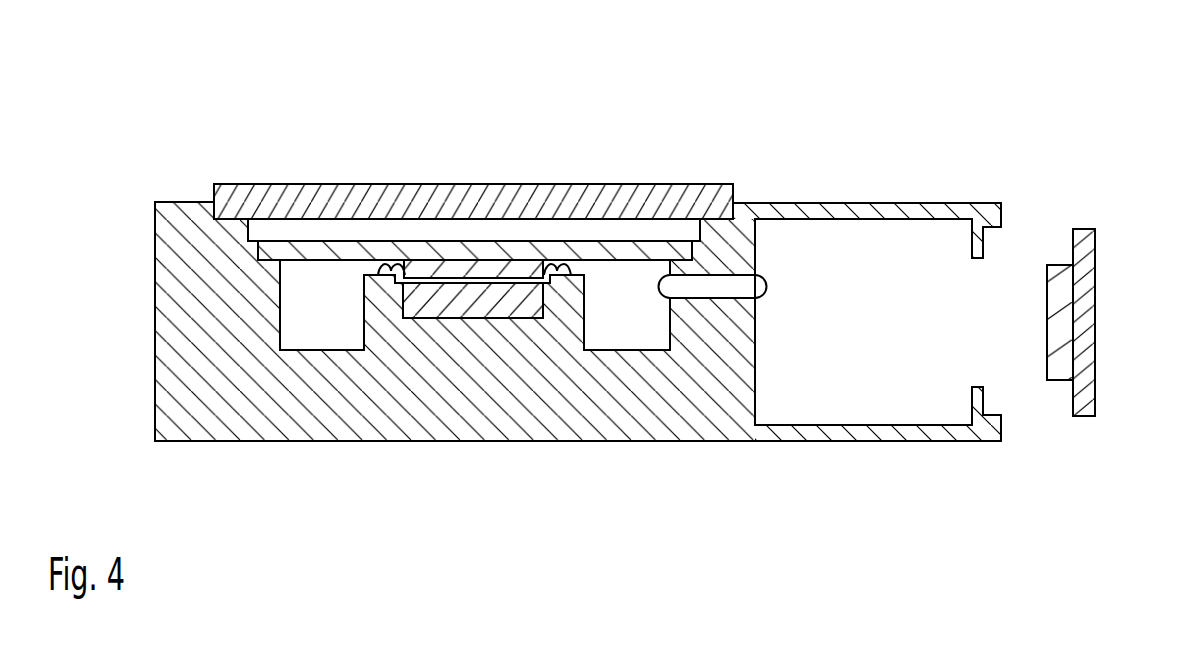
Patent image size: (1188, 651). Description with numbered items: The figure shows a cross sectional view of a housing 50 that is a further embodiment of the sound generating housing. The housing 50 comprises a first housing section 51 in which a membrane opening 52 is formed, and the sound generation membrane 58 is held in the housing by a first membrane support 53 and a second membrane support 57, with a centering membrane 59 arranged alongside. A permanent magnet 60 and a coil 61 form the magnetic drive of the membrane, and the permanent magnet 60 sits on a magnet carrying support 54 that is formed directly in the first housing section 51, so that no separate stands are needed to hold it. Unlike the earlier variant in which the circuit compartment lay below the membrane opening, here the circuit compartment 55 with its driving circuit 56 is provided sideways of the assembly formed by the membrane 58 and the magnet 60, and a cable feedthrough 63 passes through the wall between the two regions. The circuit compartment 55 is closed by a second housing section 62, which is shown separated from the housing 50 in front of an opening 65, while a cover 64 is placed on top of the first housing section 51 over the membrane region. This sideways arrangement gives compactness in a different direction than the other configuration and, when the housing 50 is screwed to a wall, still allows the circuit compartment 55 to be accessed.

The housing 50 is at (1126, 76).
The first housing section 51 is at (323, 415).
The membrane opening 52 is at (685, 230).
The first membrane support 53 is at (270, 260).
The magnet carrying support 54 is at (387, 303).
The circuit compartment 55 is at (842, 398).
The driving circuit 56 is at (1062, 365).
The second membrane support 57 is at (577, 268).
The sound generation membrane 58 is at (630, 247).
The centering membrane 59 is at (382, 265).
The permanent magnet 60 is at (480, 303).
The coil 61 is at (493, 267).
The second housing section 62 is at (1085, 265).
The cable feedthrough 63 is at (748, 289).
The cover 64 is at (250, 197).
The opening 65 is at (1005, 292).